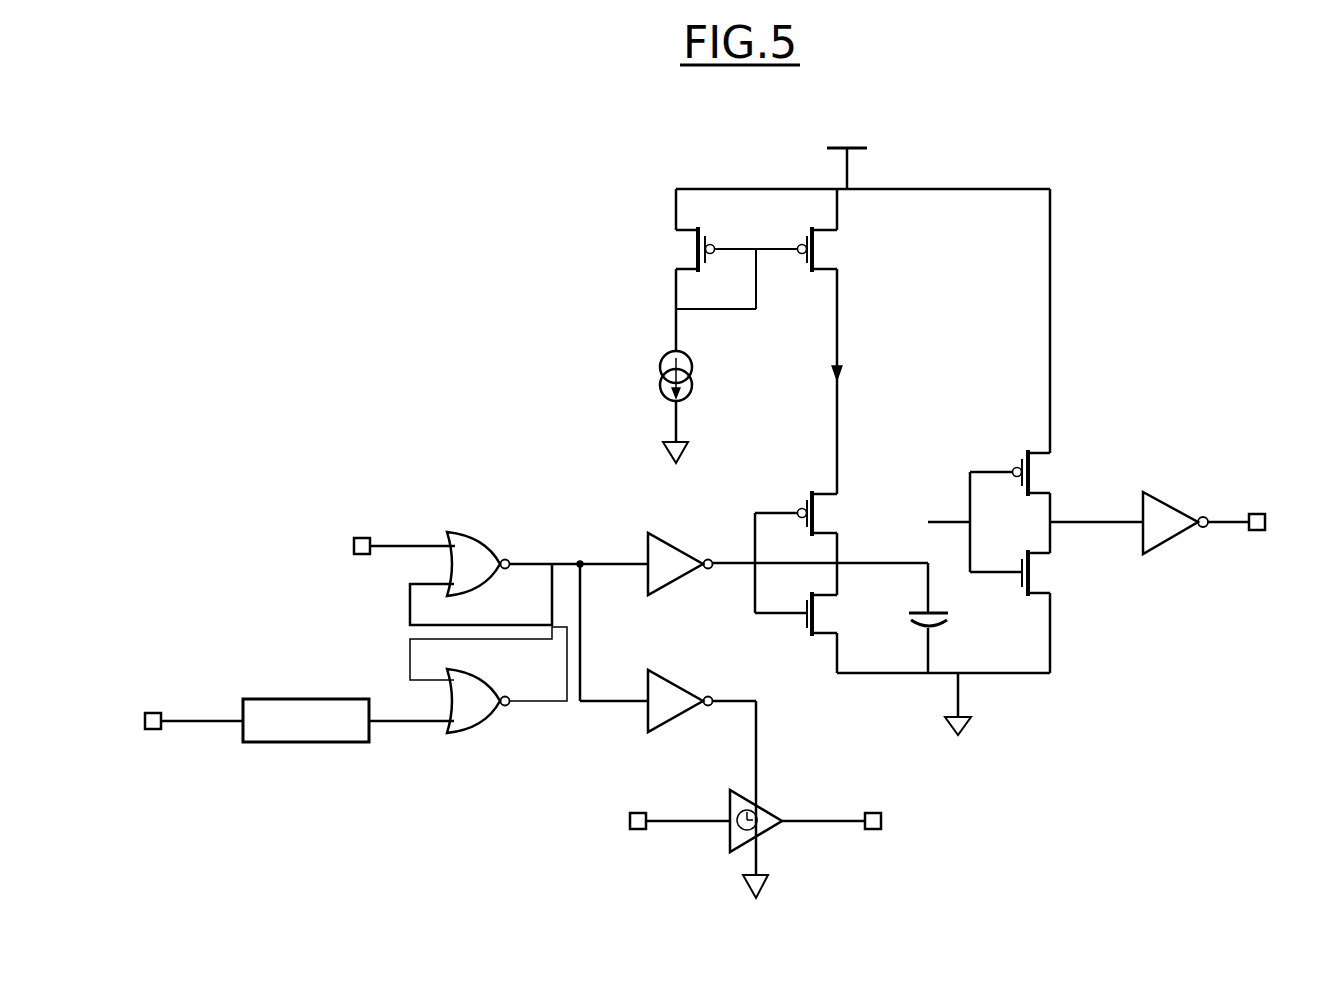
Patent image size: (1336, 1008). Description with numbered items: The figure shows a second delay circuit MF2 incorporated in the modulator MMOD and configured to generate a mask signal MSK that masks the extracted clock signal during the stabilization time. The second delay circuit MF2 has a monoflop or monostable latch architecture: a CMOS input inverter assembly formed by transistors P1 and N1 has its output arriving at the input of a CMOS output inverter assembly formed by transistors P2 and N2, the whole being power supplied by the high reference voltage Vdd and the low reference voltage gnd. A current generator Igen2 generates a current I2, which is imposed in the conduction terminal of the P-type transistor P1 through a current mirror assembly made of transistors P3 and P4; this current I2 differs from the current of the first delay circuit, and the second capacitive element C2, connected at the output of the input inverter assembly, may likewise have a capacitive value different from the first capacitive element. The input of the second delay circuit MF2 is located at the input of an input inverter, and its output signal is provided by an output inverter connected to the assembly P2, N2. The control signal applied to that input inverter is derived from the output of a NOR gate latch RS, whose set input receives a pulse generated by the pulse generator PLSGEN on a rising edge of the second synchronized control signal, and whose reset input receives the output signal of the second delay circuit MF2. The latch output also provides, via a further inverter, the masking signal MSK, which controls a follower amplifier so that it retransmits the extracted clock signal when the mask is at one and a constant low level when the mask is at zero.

The modulator MMOD is at (1246, 170).
The second delay circuit MF2 is at (1114, 229).
The P-type transistor P1 is at (823, 500).
The P-type transistor P2 is at (1040, 457).
The current mirror transistor P3 is at (685, 237).
The current mirror transistor P4 is at (825, 237).
The N-type transistor N1 is at (823, 621).
The N-type transistor N2 is at (1040, 579).
The second capacitive element C2 is at (943, 618).
The current generator Igen2 is at (705, 407).
The current I2 is at (846, 374).
The NOR gate latch RS is at (470, 526).
The mask signal MSK is at (760, 723).
The pulse generator PLSGEN is at (348, 720).
The high reference voltage Vdd is at (847, 155).
The low reference voltage gnd is at (978, 704).